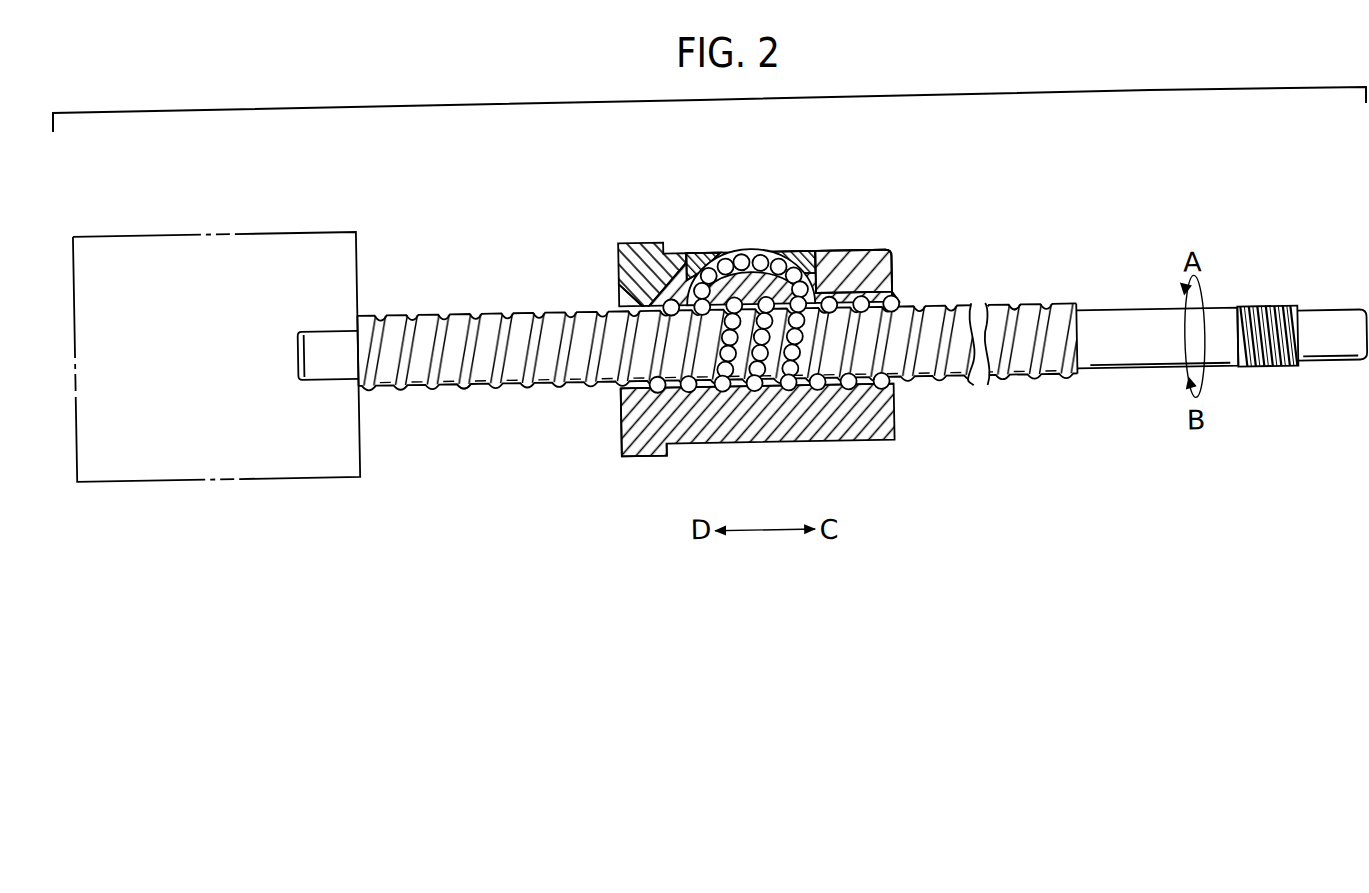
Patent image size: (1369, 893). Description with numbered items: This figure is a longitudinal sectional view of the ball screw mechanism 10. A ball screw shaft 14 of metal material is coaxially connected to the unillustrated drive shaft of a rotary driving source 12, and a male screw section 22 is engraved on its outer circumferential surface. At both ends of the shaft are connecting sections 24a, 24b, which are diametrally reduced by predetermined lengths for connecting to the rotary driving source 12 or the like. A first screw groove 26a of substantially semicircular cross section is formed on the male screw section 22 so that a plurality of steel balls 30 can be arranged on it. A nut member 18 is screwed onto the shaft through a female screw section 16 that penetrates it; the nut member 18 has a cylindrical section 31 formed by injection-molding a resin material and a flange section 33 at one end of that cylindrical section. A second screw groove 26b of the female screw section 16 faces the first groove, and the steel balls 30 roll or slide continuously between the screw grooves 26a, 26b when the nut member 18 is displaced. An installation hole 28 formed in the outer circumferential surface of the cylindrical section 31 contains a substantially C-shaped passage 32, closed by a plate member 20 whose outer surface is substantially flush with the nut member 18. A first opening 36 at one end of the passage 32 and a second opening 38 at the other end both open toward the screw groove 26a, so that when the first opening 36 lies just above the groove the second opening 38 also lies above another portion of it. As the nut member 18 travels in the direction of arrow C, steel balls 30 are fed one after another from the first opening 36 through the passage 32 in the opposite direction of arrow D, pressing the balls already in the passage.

The ball screw mechanism 10 is at (983, 194).
The rotary driving source 12 is at (360, 424).
The ball screw shaft 14 is at (1008, 392).
The female screw section 16 is at (896, 386).
The nut member 18 is at (876, 450).
The plate member 20 is at (747, 250).
The male screw section 22 is at (1020, 307).
The connecting section 24a is at (298, 345).
The connecting section 24b is at (1334, 325).
The screw groove (first screw groove) 26a is at (463, 387).
The screw groove (second screw groove) 26b is at (897, 296).
The installation hole 28 is at (694, 255).
The steel balls 30 is at (781, 394).
The cylindrical section 31 is at (706, 420).
The passage 32 is at (808, 256).
The flange section 33 is at (640, 446).
The first opening 36 is at (836, 265).
The second opening 38 is at (669, 283).